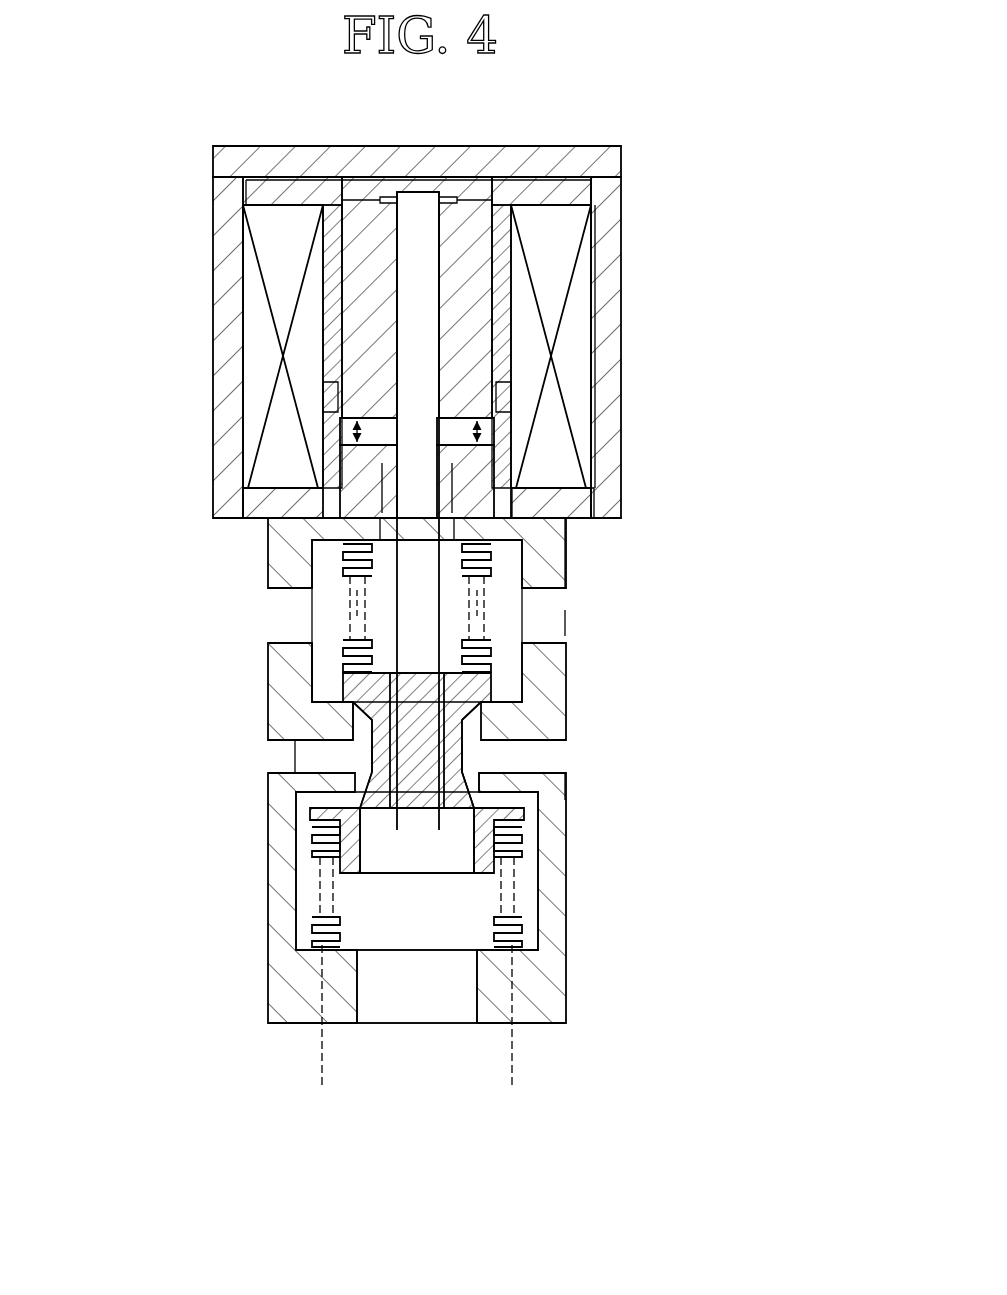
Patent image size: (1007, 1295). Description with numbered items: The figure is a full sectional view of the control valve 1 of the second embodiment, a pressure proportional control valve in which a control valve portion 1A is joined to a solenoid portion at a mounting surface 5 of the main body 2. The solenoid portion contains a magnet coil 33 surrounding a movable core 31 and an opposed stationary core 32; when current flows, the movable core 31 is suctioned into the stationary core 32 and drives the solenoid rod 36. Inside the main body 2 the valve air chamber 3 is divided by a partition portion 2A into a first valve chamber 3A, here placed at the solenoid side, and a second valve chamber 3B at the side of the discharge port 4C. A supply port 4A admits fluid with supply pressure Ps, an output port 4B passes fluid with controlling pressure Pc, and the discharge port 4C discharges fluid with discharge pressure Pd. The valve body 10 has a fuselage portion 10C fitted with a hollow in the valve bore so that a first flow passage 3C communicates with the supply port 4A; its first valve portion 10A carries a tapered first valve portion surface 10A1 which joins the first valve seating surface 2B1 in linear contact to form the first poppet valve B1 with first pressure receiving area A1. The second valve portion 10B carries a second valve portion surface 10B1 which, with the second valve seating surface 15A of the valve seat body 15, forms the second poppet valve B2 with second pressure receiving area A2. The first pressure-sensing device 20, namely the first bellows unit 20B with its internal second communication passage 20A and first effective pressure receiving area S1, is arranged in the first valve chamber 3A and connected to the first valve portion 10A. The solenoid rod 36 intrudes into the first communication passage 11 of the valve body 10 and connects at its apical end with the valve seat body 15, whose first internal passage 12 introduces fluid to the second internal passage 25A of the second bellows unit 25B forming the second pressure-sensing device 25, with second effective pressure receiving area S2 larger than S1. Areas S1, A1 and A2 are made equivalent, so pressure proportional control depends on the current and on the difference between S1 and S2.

The control valve 1 is at (650, 200).
The control valve portion 1A is at (568, 570).
The main body 2 is at (266, 578).
The partition portion 2A is at (350, 768).
The first valve seating surface 2B1 is at (350, 706).
The valve air chamber 3 is at (268, 1000).
The first valve chamber 3A is at (320, 640).
The second valve chamber 3B is at (500, 760).
The first flow passage 3C is at (500, 722).
The supply port 4A is at (290, 606).
The output port 4B is at (312, 795).
The discharge port 4C is at (445, 1000).
The mounting surface 5 is at (540, 482).
The valve body 10 is at (355, 810).
The first valve portion 10A is at (500, 690).
The first valve portion surface 10A1 is at (472, 706).
The second valve portion 10B is at (476, 848).
The second valve portion surface 10B1 is at (335, 868).
The fuselage portion 10C is at (362, 746).
The first communication passage 11 is at (470, 828).
The first internal passage 12 is at (472, 880).
The valve seat body 15 is at (358, 903).
The second valve seating surface 15A is at (336, 873).
The first pressure-sensing device 20 is at (567, 582).
The second communication passage 20A is at (385, 560).
The first bellows unit 20B is at (350, 578).
The second pressure-sensing device 25 is at (731, 964).
The second internal passage 25A is at (305, 932).
The second bellows unit 25B is at (517, 912).
The movable core 31 is at (470, 250).
The stationary core 32 is at (355, 468).
The magnet coil 33 is at (260, 318).
The solenoid rod 36 is at (405, 250).
The first effective pressure receiving area S1 is at (357, 603).
The second effective pressure receiving area S2 is at (512, 1068).
The first pressure receiving area A1 is at (479, 758).
The second pressure receiving area A2 is at (474, 843).
The first poppet valve B1 is at (352, 720).
The second poppet valve B2 is at (530, 868).
The supply pressure Ps is at (570, 622).
The controlling pressure Pc is at (578, 787).
The discharge pressure Pd is at (415, 1098).